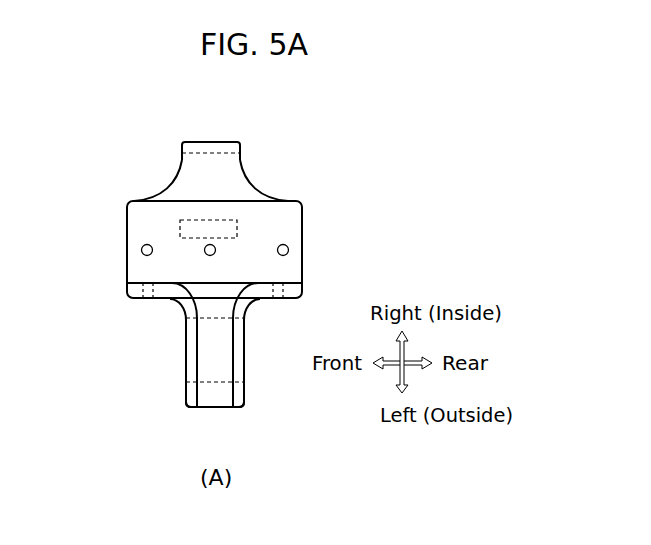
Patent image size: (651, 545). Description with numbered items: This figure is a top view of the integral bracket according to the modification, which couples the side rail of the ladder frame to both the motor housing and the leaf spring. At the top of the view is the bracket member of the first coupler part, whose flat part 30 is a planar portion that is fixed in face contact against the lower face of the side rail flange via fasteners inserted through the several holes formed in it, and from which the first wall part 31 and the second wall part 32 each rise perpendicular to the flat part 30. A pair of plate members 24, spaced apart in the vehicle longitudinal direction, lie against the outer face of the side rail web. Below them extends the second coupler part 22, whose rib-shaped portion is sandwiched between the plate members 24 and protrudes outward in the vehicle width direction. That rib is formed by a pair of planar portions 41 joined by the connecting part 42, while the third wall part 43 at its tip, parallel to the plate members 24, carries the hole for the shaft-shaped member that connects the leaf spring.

The second coupler part 22 is at (255, 417).
The plate member 24 is at (143, 299).
The flat part 30 is at (127, 247).
The first wall part 31 is at (212, 220).
The second wall part 32 is at (206, 140).
The planar portions 41 is at (186, 394).
The connecting part 42 is at (212, 299).
The third wall part 43 is at (205, 408).